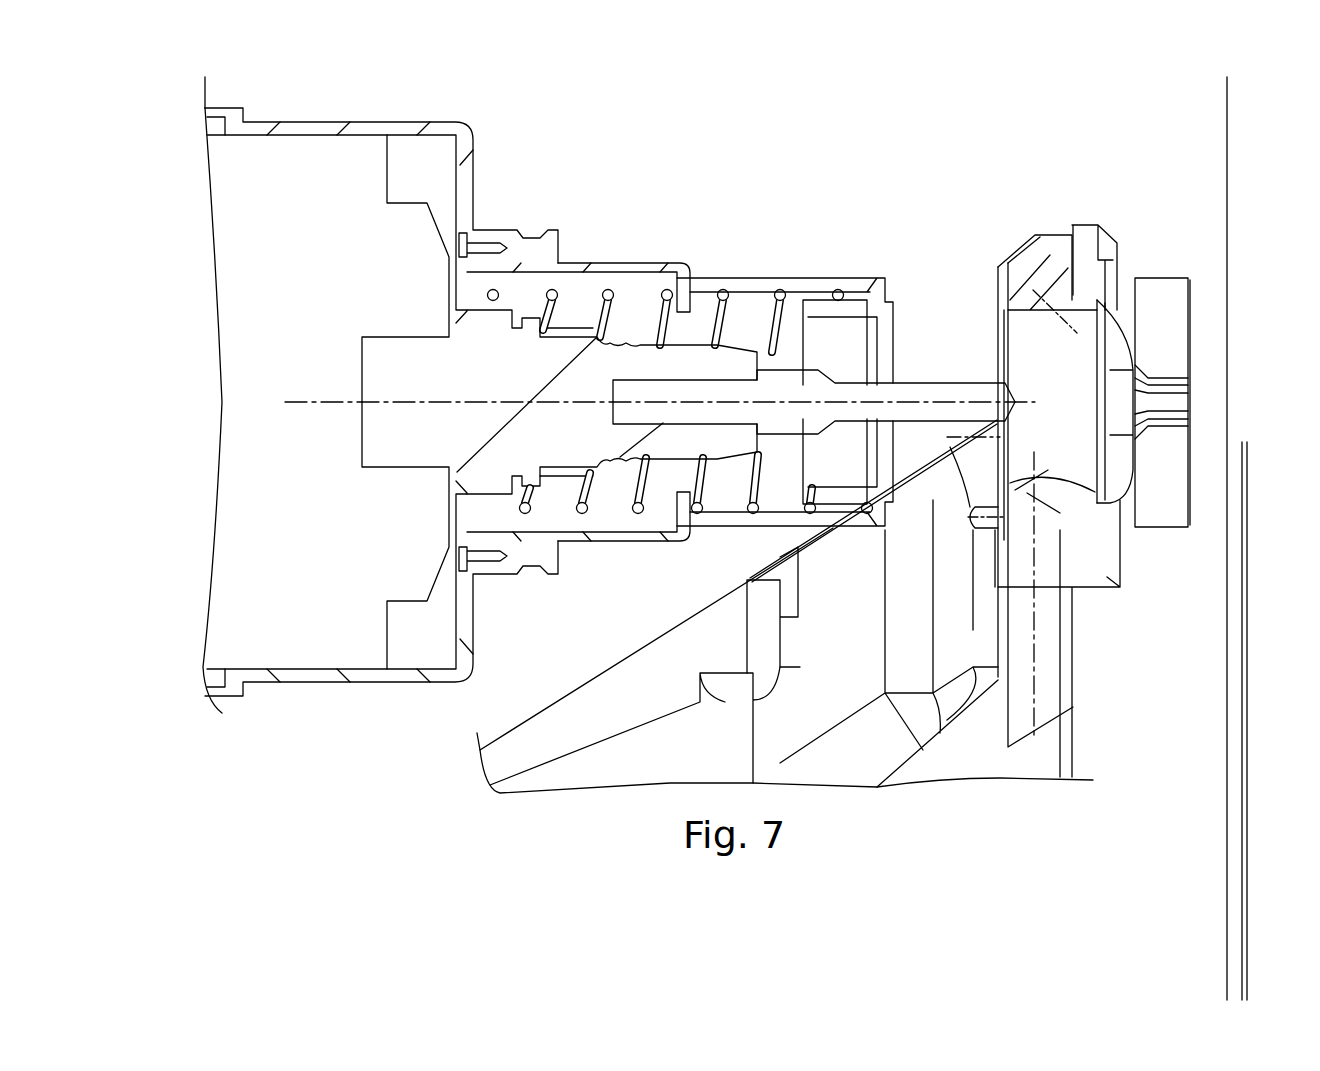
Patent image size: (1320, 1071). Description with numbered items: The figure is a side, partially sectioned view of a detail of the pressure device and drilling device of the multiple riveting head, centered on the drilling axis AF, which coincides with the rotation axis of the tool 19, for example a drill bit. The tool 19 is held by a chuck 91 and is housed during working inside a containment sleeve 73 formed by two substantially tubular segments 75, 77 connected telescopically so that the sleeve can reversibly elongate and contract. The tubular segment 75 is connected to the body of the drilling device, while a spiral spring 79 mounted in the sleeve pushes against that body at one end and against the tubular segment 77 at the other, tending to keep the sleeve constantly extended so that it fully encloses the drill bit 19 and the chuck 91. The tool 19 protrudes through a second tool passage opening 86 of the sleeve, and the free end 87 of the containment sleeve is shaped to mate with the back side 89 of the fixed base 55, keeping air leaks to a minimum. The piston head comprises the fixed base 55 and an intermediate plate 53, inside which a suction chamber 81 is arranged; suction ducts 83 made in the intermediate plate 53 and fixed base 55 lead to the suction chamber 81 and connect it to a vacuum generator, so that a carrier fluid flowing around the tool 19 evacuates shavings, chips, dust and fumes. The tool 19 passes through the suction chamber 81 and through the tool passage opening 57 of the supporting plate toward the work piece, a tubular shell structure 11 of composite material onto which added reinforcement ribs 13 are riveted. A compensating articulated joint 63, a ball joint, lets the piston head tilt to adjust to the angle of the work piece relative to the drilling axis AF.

The tubular shell structure 11 is at (1227, 157).
The added reinforcement ribs 13 is at (1248, 595).
The tool 19 is at (940, 383).
The intermediate plate 53 is at (1087, 225).
The fixed base 55 is at (1060, 295).
The tool passage opening 57 is at (1180, 403).
The compensating articulated joint 63 is at (1127, 517).
The containment sleeve 73 is at (663, 212).
The tubular segment 75 is at (617, 262).
The tubular segment 77 is at (790, 287).
The spiral spring 79 is at (747, 287).
The suction chamber 81 is at (1076, 404).
The suction ducts 83 is at (1000, 320).
The second tool passage opening 86 is at (877, 363).
The free end 87 is at (910, 310).
The back side 89 is at (995, 283).
The chuck 91 is at (697, 282).
The drilling axis AF is at (330, 397).